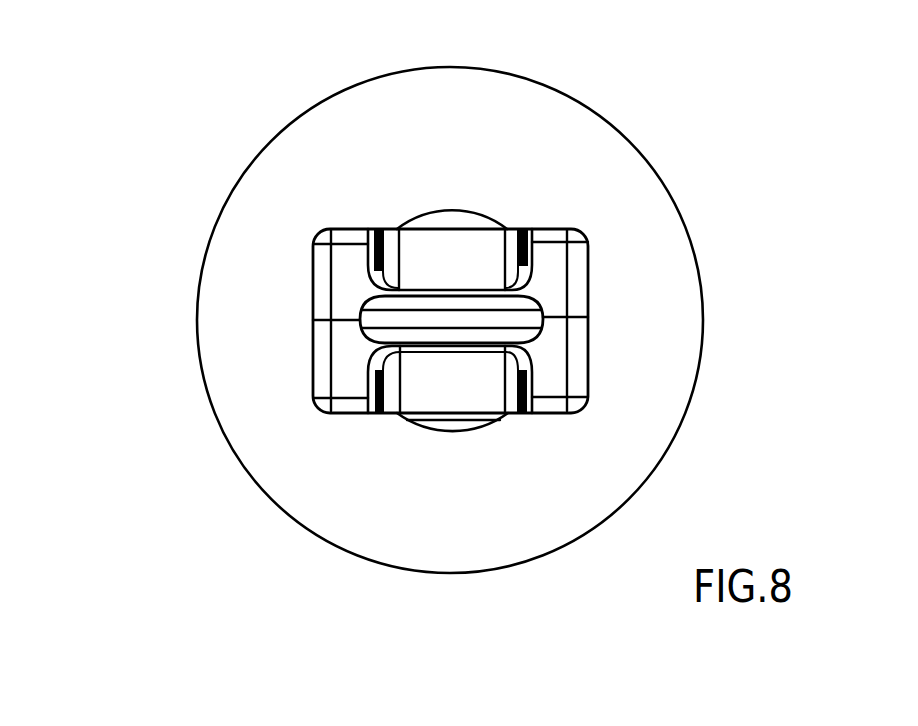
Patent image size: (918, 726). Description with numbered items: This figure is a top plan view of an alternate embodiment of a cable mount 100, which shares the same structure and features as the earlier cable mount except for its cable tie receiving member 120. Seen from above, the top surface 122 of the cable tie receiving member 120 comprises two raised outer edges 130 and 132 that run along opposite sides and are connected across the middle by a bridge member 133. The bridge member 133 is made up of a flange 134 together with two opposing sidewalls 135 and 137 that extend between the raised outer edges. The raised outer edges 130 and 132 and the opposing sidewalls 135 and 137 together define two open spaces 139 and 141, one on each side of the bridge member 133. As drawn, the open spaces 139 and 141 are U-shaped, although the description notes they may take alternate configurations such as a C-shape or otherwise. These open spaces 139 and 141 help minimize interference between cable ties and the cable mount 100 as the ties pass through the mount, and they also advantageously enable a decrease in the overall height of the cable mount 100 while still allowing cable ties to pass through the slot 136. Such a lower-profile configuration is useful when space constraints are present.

The cable mount 100 is at (712, 178).
The cable tie receiving member 120 is at (604, 357).
The top surface 122 is at (348, 267).
The raised outer edge 130 is at (312, 298).
The raised outer edge 132 is at (590, 275).
The bridge member 133 is at (485, 306).
The flange 134 is at (393, 320).
The sidewall 135 is at (402, 416).
The slot 136 is at (460, 382).
The sidewall 137 is at (422, 284).
The open space 139 is at (487, 390).
The open space 141 is at (445, 248).